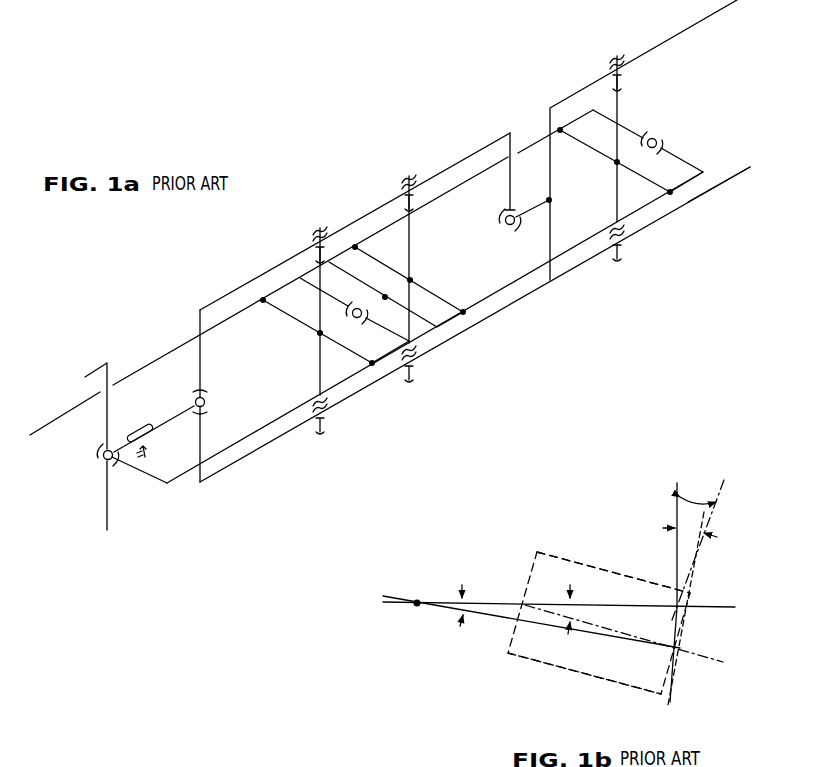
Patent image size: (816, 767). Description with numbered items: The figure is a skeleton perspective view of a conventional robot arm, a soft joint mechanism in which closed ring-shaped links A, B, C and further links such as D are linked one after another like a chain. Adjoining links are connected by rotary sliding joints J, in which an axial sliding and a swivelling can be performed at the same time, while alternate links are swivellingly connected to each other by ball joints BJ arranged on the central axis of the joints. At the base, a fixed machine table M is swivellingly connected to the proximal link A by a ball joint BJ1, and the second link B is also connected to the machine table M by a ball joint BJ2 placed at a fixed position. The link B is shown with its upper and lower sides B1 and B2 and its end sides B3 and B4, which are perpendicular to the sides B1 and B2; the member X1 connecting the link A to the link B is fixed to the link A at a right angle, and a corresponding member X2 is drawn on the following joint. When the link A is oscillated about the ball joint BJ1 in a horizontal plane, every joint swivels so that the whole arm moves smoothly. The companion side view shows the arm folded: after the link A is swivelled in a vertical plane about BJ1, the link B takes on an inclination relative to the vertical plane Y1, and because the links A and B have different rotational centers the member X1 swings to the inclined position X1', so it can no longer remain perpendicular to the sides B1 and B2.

In FIG. 1a, the proximal link A is at (177, 486).
In FIG. 1b, the proximal link A is at (498, 619).
In FIG. 1a, the second link B is at (353, 395).
In FIG. 1b, the second link B is at (543, 670).
In FIG. 1a, the upper side of link B B1 is at (227, 293).
In FIG. 1b, the upper side of link B B1 is at (570, 560).
In FIG. 1a, the lower side of link B B2 is at (253, 452).
In FIG. 1b, the lower side of link B B2 is at (580, 676).
In FIG. 1a, the side of link B B3 is at (508, 182).
In FIG. 1a, the side of link B B4 is at (198, 323).
In FIG. 1a, the link C is at (552, 276).
In FIG. 1a, the beam D is at (688, 204).
In FIG. 1a, the fixed machine table M is at (147, 470).
In FIG. 1a, the rotary sliding joint J is at (318, 226).
In FIG. 1a, the ball joint BJ is at (360, 307).
In FIG. 1a, the ball joint BJ1 is at (102, 462).
In FIG. 1b, the ball joint BJ1 is at (417, 601).
In FIG. 1a, the ball joint BJ2 is at (195, 402).
In FIG. 1a, the member X1 is at (290, 311).
In FIG. 1b, the member X1 is at (691, 659).
In FIG. 1b, the inclined position of member X1 X1' is at (663, 602).
In FIG. 1a, the axis / bar X2 is at (413, 228).
In FIG. 1b, the vertical plane Y1 is at (677, 548).